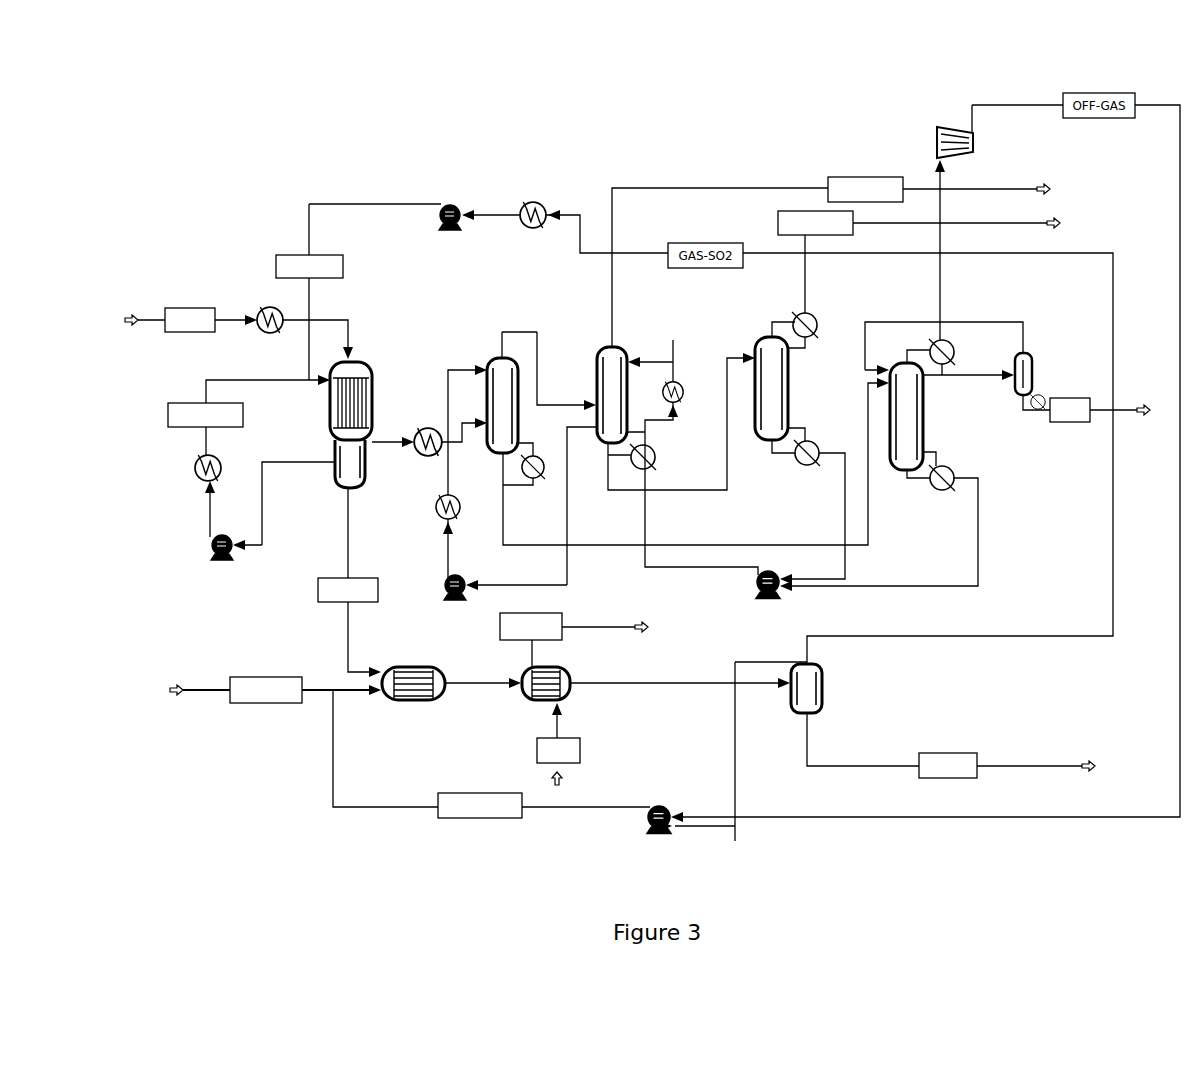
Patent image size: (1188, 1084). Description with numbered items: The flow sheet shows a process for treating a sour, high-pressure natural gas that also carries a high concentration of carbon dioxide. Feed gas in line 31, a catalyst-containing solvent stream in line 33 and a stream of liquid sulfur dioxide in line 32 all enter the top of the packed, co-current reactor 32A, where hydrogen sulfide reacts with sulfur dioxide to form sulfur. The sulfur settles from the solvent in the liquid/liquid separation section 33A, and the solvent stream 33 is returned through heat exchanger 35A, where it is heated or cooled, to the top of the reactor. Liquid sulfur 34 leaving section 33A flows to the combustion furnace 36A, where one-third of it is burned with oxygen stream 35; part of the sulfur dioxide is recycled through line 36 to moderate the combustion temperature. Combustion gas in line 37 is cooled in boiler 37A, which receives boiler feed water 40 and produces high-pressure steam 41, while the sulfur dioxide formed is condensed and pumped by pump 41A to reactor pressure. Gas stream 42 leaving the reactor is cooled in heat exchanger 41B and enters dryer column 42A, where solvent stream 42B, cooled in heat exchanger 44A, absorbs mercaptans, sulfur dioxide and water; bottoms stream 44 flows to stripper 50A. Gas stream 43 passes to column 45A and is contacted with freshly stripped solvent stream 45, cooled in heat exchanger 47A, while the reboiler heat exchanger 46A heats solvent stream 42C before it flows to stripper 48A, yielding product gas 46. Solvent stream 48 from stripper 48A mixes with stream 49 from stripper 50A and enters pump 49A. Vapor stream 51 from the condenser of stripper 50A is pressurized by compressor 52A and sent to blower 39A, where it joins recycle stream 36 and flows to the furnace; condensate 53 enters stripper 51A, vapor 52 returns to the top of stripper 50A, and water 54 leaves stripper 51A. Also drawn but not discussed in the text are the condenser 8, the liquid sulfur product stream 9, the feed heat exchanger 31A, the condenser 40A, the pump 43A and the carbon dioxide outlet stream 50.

The sulfur condenser CNDNSR-1 / off-gas stream 8 is at (1033, 636).
The liquid sulfur product stream LIQ-S2 9 is at (946, 753).
The feed gas line 31 is at (188, 332).
The feed cooler heat exchanger HX1-C 31A is at (269, 340).
The liquid sulfur dioxide stream 32 is at (367, 204).
The reactor 32A is at (315, 401).
The solvent stream 33 is at (168, 410).
The liquid/liquid separation section 33A is at (324, 471).
The liquid sulfur stream 34 is at (348, 632).
The oxygen stream 35 is at (265, 703).
The heat exchanger 35A is at (179, 476).
The SO2 recycle line 36 is at (733, 767).
The combustion furnace 36A is at (413, 706).
The combustion gas line 37 is at (462, 683).
The boiler 37A is at (531, 706).
The blower 39A is at (654, 841).
The boiler feed water 40 is at (557, 725).
The condenser CNDNSR-2 40A is at (532, 234).
The high-pressure steam line 41 is at (600, 627).
The pump 41A is at (449, 239).
The heat exchanger 41B is at (427, 462).
The reactor exit gas stream 42 is at (387, 442).
The dryer column 42A is at (496, 406).
The solvent stream 42B is at (567, 522).
The solvent stream 42C is at (705, 490).
The gas stream 43 is at (518, 332).
The pump PUMP-4 43A is at (427, 581).
The dryer bottoms stream 44 is at (503, 522).
The heat exchanger 44A is at (345, 550).
The freshly stripped solvent stream 45 is at (658, 347).
The absorber column 45A is at (588, 386).
The product gas stream 46 is at (612, 283).
The reboiler heat exchanger 46A is at (661, 457).
The heat exchanger 47A is at (689, 394).
The solvent stream 48 is at (845, 510).
The stripper 48A is at (797, 389).
The solvent stream 49 is at (978, 537).
The pump 49A is at (766, 603).
The CO2 out stream 50 is at (805, 296).
The stripper 50A is at (929, 415).
The vapor stream 51 is at (940, 292).
The stripper 51A is at (1044, 376).
The vapor stream 52 is at (978, 322).
The compressor 52A is at (992, 146).
The condensate stream 53 is at (978, 375).
The water stream 54 is at (1072, 422).